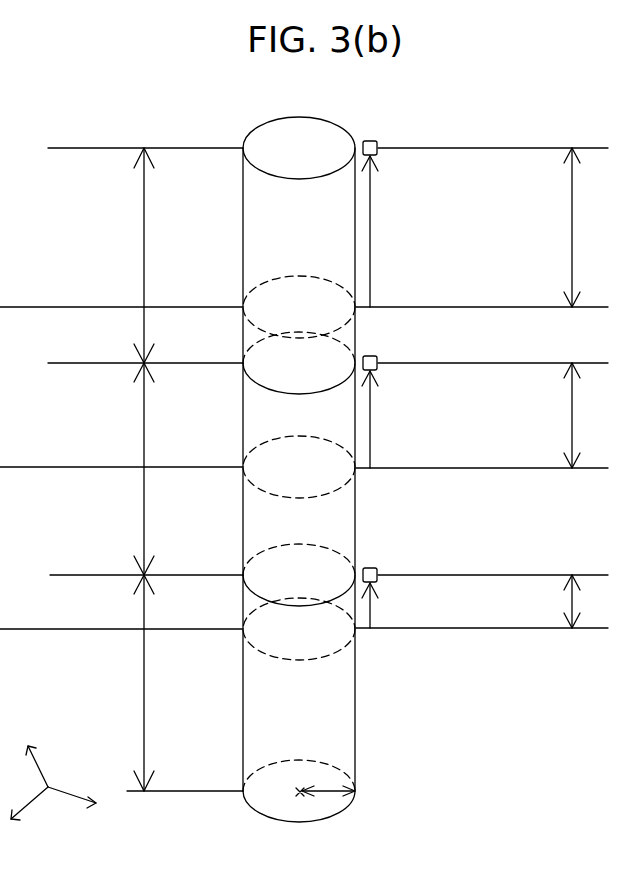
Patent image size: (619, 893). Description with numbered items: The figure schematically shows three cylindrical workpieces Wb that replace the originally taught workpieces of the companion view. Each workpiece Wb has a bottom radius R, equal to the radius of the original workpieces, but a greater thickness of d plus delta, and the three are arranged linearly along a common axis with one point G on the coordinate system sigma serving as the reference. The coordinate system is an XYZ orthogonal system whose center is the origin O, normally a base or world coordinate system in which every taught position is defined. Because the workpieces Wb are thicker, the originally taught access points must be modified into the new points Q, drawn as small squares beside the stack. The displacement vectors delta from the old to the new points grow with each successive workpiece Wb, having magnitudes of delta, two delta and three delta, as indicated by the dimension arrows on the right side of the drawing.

The workpiece Wb is at (237, 136).
The reference point G is at (300, 794).
The bottom radius R is at (325, 793).
The origin O is at (54, 812).